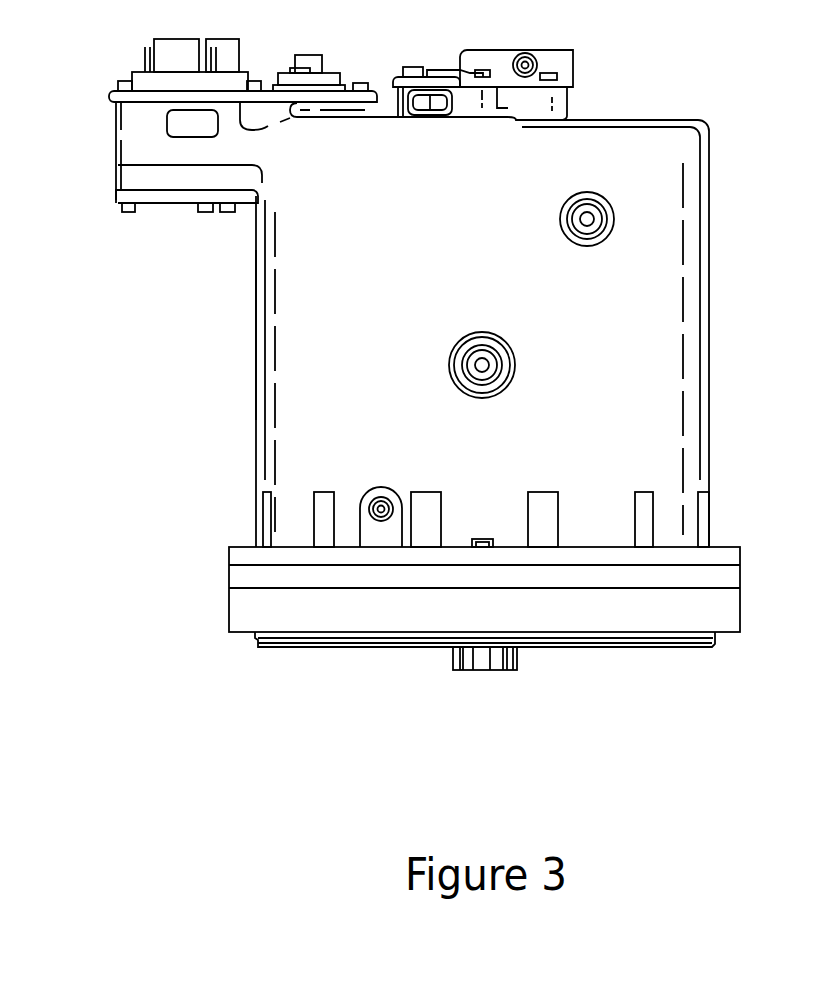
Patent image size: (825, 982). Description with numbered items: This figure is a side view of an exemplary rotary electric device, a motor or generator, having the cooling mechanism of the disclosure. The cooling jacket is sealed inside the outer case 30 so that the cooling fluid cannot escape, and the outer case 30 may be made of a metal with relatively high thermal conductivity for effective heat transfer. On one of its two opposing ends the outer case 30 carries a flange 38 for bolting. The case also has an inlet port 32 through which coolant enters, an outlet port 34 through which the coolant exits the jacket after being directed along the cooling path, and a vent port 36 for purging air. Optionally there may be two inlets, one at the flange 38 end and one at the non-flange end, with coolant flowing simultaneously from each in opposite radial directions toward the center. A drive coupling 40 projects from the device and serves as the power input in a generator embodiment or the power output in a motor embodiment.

The outer case 30 is at (629, 115).
The inlet port 32 is at (605, 207).
The outlet port 34 is at (498, 362).
The vent port 36 is at (254, 332).
The flange 38 is at (727, 558).
The drive coupling 40 is at (517, 676).